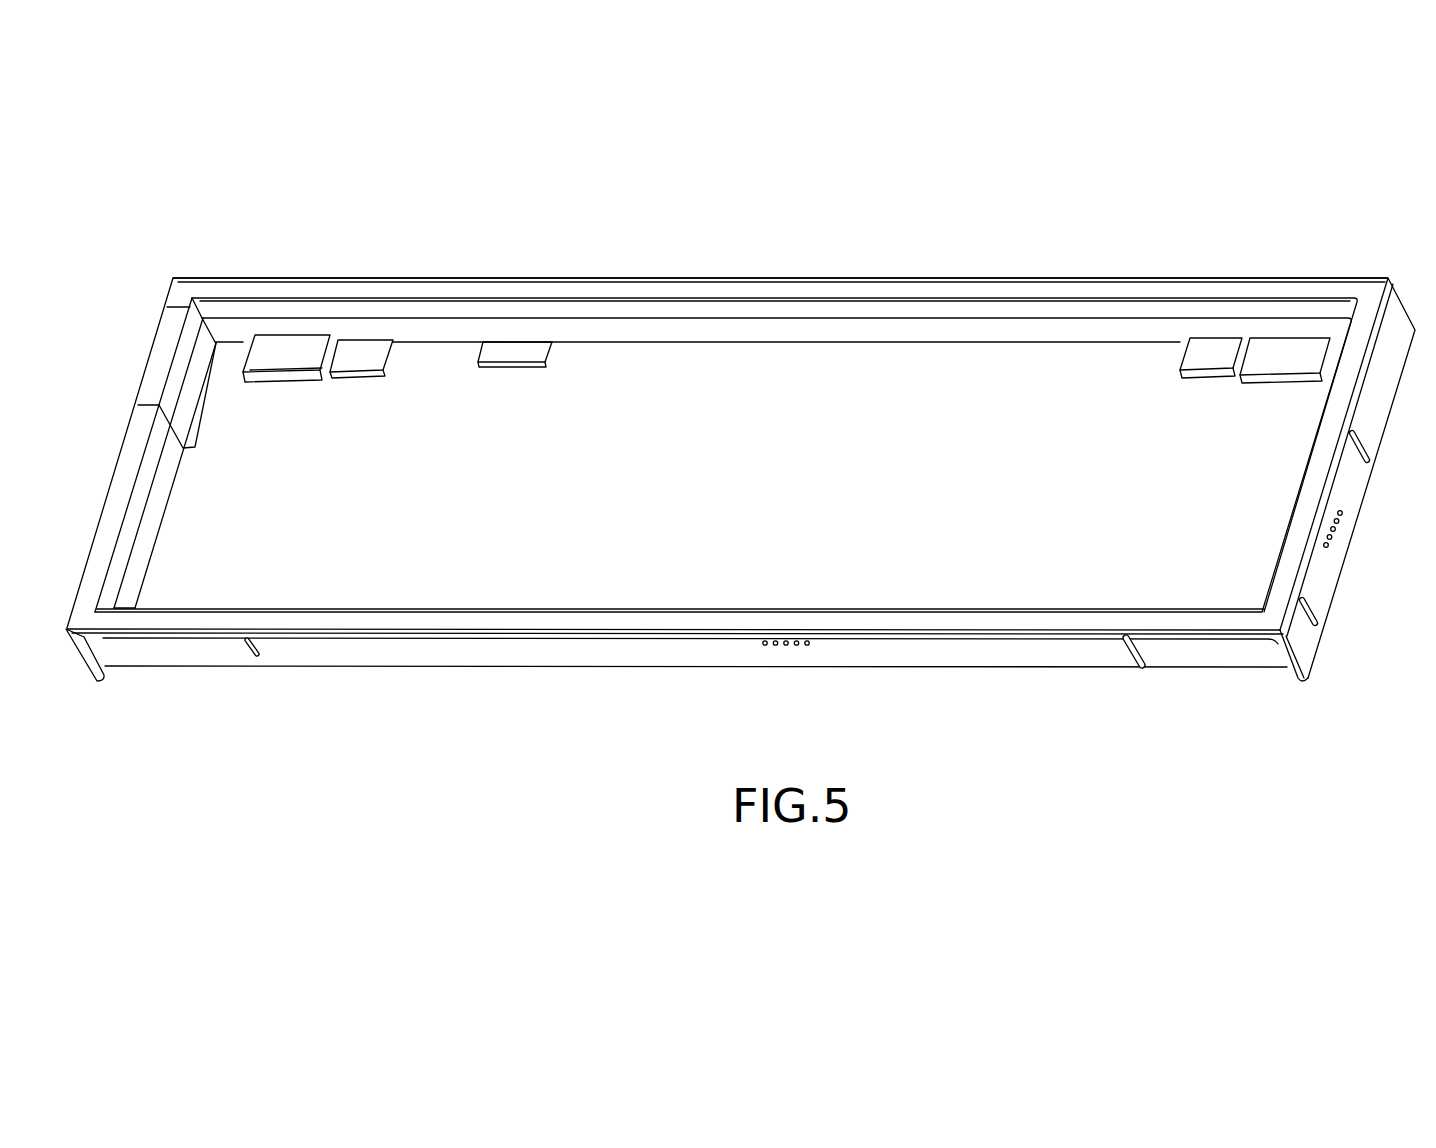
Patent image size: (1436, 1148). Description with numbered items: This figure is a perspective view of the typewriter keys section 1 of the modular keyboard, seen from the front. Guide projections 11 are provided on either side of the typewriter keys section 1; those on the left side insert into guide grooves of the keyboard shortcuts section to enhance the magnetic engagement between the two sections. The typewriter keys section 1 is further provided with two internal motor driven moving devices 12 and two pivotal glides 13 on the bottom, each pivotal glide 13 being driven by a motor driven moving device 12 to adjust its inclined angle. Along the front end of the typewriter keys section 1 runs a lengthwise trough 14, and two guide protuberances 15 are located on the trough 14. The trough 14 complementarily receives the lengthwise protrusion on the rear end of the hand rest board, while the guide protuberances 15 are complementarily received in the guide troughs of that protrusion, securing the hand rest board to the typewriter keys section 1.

The typewriter keys section 1 is at (1350, 490).
The guide projection 11 is at (1322, 621).
The motor driven moving device 12 is at (1218, 352).
The pivotal glide 13 is at (1298, 352).
The lengthwise trough 14 is at (857, 660).
The guide protuberance 15 is at (1142, 672).